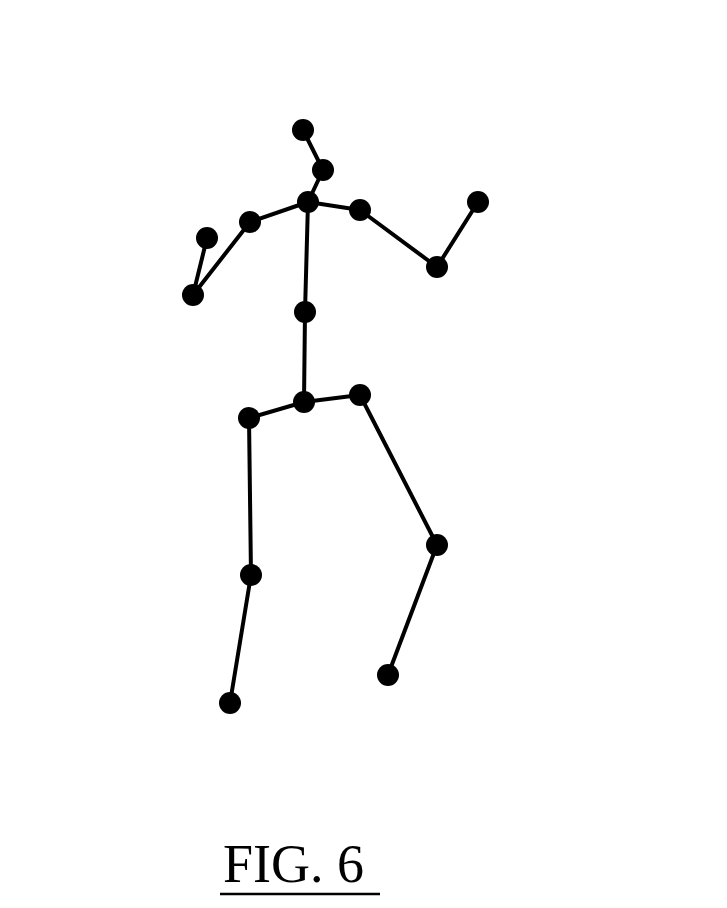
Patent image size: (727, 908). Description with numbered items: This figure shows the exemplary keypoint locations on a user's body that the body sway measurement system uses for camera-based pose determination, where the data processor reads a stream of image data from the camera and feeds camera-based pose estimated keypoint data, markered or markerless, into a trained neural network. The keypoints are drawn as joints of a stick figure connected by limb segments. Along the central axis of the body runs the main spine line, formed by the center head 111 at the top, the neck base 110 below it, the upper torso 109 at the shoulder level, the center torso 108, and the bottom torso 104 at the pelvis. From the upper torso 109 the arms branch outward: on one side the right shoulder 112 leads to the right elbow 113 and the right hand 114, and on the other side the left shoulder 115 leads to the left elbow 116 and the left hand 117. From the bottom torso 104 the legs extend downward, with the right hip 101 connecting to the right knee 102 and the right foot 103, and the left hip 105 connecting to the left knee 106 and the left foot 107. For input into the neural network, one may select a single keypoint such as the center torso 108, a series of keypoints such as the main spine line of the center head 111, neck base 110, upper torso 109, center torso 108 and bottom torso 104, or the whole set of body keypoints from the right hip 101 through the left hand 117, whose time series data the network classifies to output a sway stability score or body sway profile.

The right hip 101 is at (233, 427).
The right knee 102 is at (233, 582).
The right foot 103 is at (218, 715).
The bottom torso 104 is at (313, 427).
The left hip 105 is at (380, 390).
The left knee 106 is at (458, 542).
The left foot 107 is at (397, 692).
The center torso 108 is at (287, 323).
The upper torso 109 is at (317, 220).
The neck base 110 is at (340, 157).
The center head 111 is at (302, 110).
The right shoulder 112 is at (250, 203).
The right elbow 113 is at (177, 300).
The right hand 114 is at (185, 243).
The left shoulder 115 is at (372, 195).
The left elbow 116 is at (453, 273).
The left hand 117 is at (495, 205).